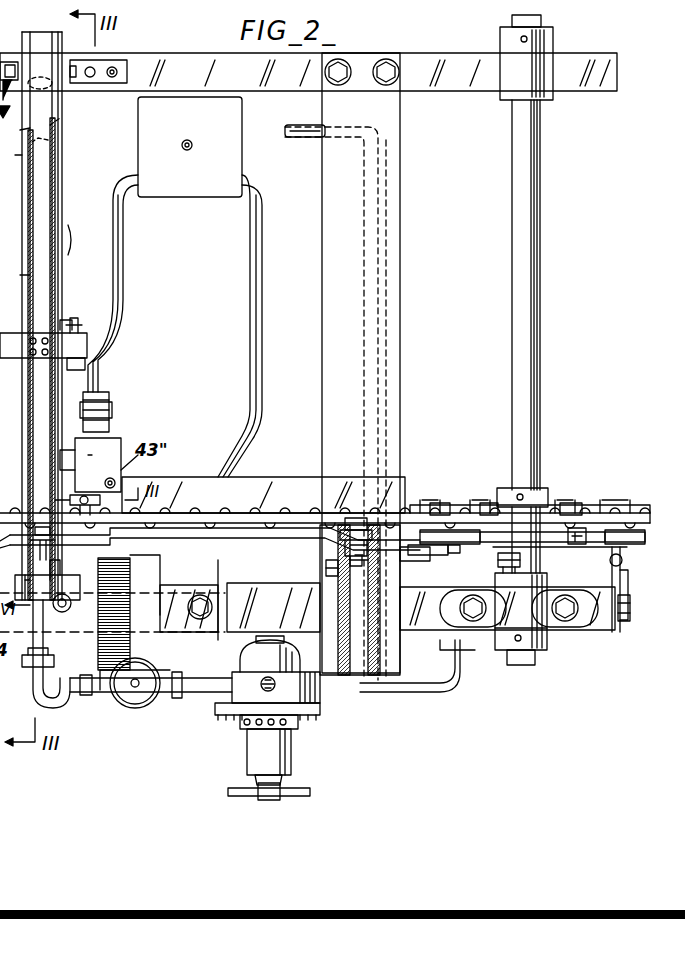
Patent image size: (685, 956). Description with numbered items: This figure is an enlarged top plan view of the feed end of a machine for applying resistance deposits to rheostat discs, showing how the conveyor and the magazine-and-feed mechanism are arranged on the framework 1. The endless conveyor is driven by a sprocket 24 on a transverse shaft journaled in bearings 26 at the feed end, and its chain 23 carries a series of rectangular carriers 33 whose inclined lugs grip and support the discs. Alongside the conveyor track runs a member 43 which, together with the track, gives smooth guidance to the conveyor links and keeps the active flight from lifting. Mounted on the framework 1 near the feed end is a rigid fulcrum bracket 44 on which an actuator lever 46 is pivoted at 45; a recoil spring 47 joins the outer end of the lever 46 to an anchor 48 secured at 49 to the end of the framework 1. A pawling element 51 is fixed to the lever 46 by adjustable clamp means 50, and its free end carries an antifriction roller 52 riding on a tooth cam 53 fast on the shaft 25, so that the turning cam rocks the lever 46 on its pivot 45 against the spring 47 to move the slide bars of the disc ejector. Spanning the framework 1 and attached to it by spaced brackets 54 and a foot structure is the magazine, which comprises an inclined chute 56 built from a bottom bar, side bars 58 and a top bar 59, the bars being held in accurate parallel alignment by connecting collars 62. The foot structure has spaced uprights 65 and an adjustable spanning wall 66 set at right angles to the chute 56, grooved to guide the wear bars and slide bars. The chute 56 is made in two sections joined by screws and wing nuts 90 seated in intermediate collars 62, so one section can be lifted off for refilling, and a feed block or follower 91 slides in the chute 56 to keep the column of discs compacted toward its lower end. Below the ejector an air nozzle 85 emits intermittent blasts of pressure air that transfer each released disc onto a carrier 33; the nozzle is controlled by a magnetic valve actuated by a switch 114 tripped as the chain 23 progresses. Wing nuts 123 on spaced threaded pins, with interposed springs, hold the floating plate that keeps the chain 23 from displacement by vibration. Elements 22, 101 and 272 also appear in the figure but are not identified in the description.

The framework 1 is at (194, 100).
The rod 22 is at (15, 134).
The chain 23 is at (445, 504).
The sprocket 24 is at (570, 503).
The shaft 25 is at (540, 316).
The bearings 26 is at (555, 100).
The rectangular carrier 33 is at (315, 510).
The member 43 is at (283, 490).
The rigid fulcrum bracket 44 is at (430, 555).
The pivot 45 is at (345, 548).
The actuator lever 46 is at (570, 548).
The recoil spring 47 is at (622, 558).
The anchor 48 is at (628, 585).
The securing point 49 is at (630, 608).
The clamp means 50 is at (498, 560).
The pawling element 51 is at (492, 504).
The antifriction roller 52 is at (582, 533).
The tooth cam 53 is at (645, 537).
The spaced brackets 54 is at (128, 65).
The inclined chute 56 is at (83, 240).
The side bars 58 is at (47, 214).
The top bar 59 is at (42, 200).
The connecting collars 62 is at (80, 340).
The spaced uprights 65 is at (100, 610).
The spanning wall 66 is at (129, 612).
The air nozzle 85 is at (63, 645).
The wing nuts 90 is at (82, 320).
The feed block or follower 91 is at (58, 128).
The pipe fitting 101 is at (109, 410).
The switch 114 is at (121, 445).
The wing nuts 123 is at (100, 498).
The tube 272 is at (120, 548).